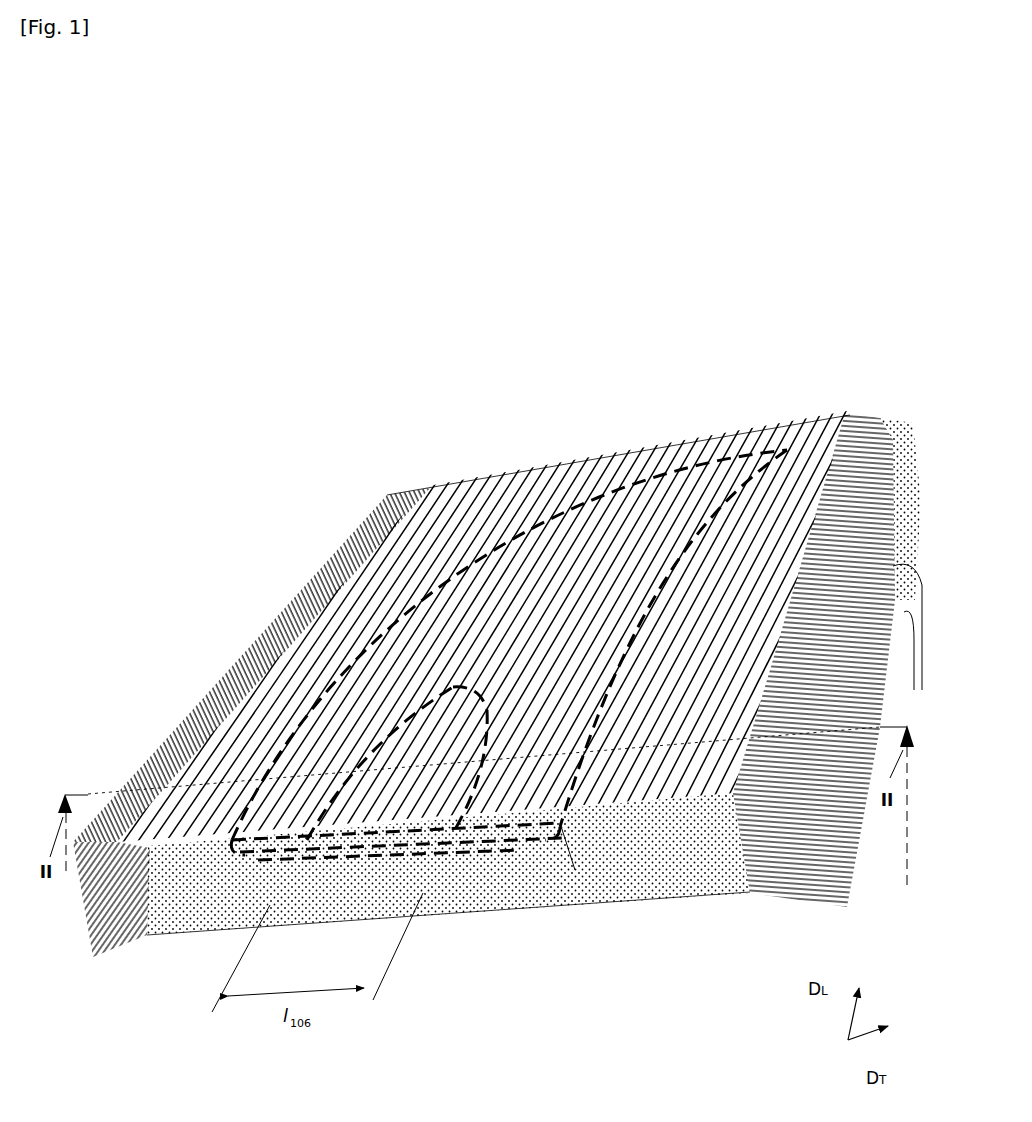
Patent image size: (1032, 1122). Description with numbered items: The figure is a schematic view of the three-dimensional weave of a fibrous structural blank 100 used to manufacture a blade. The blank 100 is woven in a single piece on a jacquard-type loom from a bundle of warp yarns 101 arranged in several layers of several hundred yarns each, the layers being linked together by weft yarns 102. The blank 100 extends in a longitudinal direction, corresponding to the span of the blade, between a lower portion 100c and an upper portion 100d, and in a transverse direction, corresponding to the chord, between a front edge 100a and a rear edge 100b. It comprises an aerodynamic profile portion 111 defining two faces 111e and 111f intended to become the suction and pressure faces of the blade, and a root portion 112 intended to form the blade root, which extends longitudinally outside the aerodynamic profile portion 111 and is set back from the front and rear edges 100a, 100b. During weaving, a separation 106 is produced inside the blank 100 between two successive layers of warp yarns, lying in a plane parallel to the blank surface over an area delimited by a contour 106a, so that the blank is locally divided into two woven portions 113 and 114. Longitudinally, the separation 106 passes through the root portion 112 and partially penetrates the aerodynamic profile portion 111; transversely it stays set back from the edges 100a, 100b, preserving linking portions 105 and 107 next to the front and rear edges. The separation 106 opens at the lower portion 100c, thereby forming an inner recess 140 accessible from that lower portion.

The fibrous structural blank 100 is at (524, 557).
The front edge 100a is at (362, 532).
The rear edge 100b is at (841, 411).
The lower portion 100c is at (440, 878).
The upper portion 100d is at (698, 440).
The warp yarns 101 is at (636, 875).
The weft yarns 102 is at (914, 600).
The linking portion 105 is at (240, 897).
The separation 106 is at (318, 862).
The inner recess 140 is at (318, 862).
The contour 106a is at (575, 870).
The linking portion 107 is at (483, 870).
The aerodynamic profile portion 111 is at (565, 572).
The face 111e is at (238, 654).
The face 111f is at (505, 870).
The root portion 112 is at (185, 728).
The woven portion 113 is at (458, 835).
The woven portion 114 is at (342, 880).